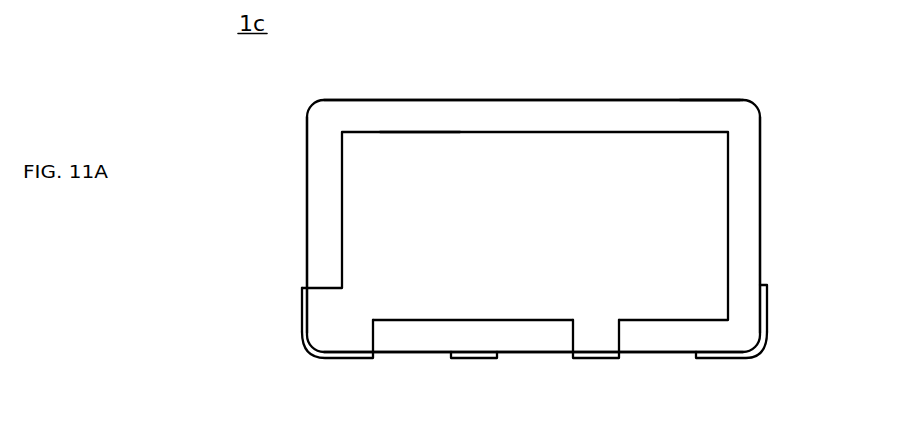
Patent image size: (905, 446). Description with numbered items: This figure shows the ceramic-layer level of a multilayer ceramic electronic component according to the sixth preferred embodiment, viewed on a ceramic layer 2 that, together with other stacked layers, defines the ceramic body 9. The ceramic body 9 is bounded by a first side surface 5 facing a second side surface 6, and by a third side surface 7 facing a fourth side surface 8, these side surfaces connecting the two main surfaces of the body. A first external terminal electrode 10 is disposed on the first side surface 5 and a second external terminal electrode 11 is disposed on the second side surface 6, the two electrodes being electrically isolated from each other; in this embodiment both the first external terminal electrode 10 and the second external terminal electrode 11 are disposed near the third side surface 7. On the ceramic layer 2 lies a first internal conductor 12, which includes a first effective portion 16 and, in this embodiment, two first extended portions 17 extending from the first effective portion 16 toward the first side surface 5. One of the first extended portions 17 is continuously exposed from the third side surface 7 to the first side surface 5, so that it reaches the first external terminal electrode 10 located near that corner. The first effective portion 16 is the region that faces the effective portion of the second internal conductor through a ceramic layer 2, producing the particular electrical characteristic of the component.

The ceramic layer 2 is at (747, 140).
The first side surface 5 is at (307, 190).
The second side surface 6 is at (760, 213).
The third side surface 7 is at (529, 352).
The fourth side surface 8 is at (578, 100).
The ceramic body 9 is at (714, 98).
The first external terminal electrode 10 is at (347, 360).
The second external terminal electrode 11 is at (478, 358).
The first internal conductor 12 is at (418, 130).
The first effective portion 16 is at (512, 143).
The first extended portion 17 is at (318, 326).